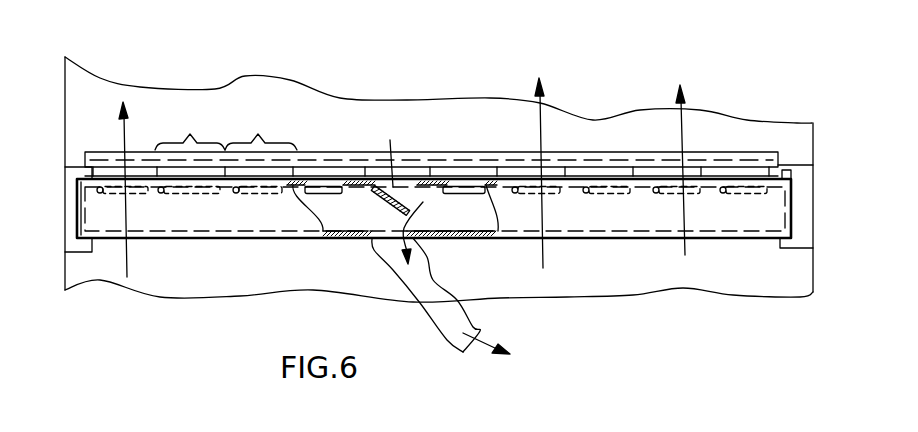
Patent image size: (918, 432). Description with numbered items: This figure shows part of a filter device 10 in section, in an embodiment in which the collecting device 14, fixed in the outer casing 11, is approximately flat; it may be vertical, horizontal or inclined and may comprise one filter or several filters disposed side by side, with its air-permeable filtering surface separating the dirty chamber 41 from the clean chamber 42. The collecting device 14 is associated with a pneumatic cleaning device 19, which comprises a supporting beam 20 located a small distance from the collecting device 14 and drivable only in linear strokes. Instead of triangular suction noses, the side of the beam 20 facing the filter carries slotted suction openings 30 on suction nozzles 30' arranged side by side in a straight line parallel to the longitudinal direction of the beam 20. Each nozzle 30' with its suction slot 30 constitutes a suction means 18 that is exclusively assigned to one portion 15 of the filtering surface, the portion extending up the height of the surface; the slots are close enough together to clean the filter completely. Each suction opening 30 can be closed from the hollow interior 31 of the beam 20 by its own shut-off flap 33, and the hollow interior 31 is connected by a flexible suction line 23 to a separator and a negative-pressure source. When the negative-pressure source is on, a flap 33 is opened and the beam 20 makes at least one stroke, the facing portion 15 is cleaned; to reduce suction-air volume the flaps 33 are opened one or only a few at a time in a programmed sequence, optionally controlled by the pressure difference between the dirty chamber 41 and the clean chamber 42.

The filter device 10 is at (616, 89).
The outer casing 11 is at (60, 273).
The collecting device 14 is at (565, 151).
The portion of the filtering surface 15 is at (226, 132).
The suction means 18 is at (174, 177).
The pneumatic cleaning device 19 is at (732, 245).
The supporting beam 20 is at (560, 212).
The flexible suction line 23 is at (410, 273).
The suction opening 30 is at (431, 109).
The suction nozzle 30' is at (381, 153).
The hollow interior 31 is at (468, 220).
The shut-off flap 33 is at (263, 192).
The dirty chamber 41 is at (255, 285).
The clean chamber 42 is at (219, 95).